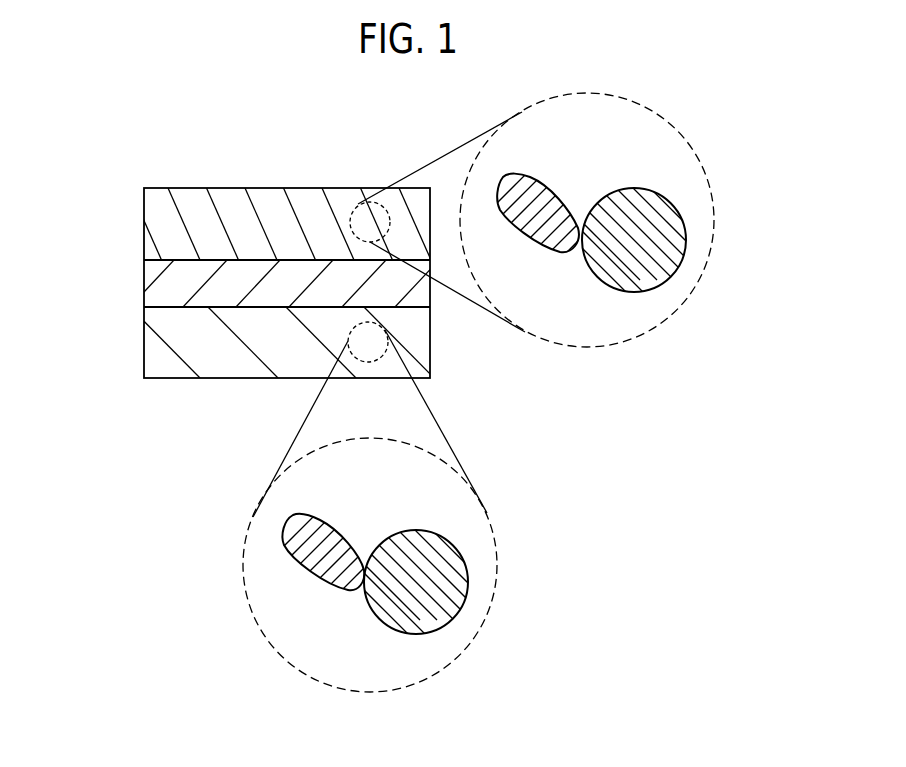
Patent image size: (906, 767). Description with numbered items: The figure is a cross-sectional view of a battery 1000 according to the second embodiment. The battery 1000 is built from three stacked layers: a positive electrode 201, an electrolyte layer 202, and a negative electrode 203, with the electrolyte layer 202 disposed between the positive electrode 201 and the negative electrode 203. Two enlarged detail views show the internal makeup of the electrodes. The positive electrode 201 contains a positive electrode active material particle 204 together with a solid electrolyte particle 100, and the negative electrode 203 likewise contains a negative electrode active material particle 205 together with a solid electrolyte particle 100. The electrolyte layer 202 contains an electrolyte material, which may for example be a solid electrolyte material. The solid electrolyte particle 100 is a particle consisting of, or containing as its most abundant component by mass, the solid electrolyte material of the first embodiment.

The battery 1000 is at (306, 135).
The positive electrode 201 is at (165, 208).
The electrolyte layer 202 is at (165, 280).
The negative electrode 203 is at (165, 347).
The solid electrolyte particle 100 is at (560, 235).
The positive electrode active material particle 204 is at (657, 233).
The negative electrode active material particle 205 is at (442, 568).